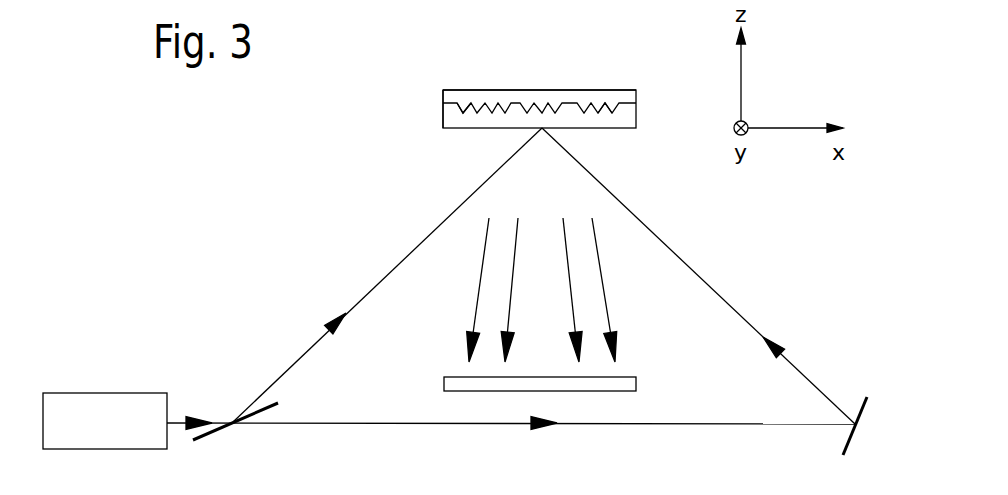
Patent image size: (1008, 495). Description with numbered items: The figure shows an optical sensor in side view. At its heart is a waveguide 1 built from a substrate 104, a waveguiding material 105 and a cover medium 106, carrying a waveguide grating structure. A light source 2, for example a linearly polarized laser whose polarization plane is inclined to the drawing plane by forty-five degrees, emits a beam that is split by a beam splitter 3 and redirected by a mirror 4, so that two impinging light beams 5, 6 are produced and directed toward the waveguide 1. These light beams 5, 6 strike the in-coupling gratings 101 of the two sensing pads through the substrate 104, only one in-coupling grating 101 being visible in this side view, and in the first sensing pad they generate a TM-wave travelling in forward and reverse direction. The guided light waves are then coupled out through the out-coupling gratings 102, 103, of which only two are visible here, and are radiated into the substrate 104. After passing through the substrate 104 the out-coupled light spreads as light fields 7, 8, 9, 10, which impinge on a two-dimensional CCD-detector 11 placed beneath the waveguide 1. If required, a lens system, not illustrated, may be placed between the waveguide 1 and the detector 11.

The waveguide 1 is at (652, 108).
The light source 2 is at (103, 412).
The beam splitter 3 is at (210, 433).
The mirror 4 is at (852, 435).
The impinging light beam 5 is at (417, 243).
The impinging light beam 6 is at (677, 255).
The light field 7 is at (480, 270).
The light field 8 is at (510, 305).
The light field 9 is at (567, 267).
The light field 10 is at (608, 312).
The two-dimensional CCD-detector 11 is at (636, 383).
The in-coupling grating 101 is at (542, 106).
The out-coupling grating 102 is at (470, 110).
The out-coupling grating 103 is at (607, 110).
The substrate 104 is at (450, 117).
The waveguiding material 105 is at (450, 97).
The cover medium 106 is at (478, 83).